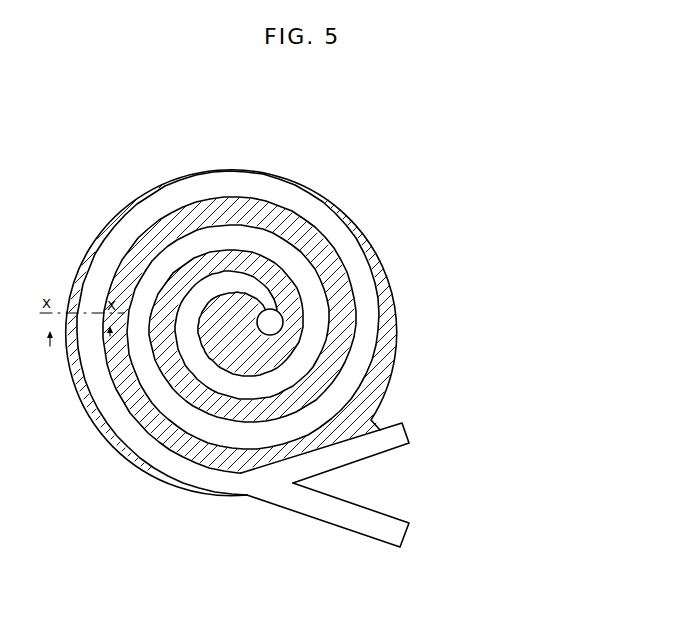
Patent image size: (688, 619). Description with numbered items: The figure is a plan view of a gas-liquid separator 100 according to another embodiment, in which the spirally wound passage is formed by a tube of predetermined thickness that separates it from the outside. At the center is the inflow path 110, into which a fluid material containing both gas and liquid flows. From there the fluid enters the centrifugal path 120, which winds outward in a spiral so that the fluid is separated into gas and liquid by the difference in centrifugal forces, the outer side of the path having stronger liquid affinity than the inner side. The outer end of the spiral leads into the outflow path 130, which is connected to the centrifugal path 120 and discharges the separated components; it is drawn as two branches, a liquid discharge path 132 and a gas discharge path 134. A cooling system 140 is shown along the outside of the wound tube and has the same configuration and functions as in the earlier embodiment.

The gas-liquid separator 100 is at (392, 153).
The inflow path 110 is at (283, 323).
The centrifugal path 120 is at (363, 277).
The outflow path 130 is at (535, 480).
The liquid discharge path 132 is at (393, 532).
The gas discharge path 134 is at (372, 452).
The cooling system 140 is at (392, 313).